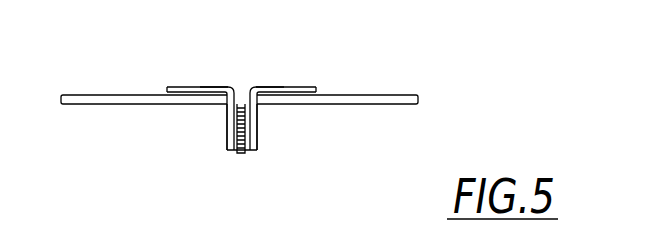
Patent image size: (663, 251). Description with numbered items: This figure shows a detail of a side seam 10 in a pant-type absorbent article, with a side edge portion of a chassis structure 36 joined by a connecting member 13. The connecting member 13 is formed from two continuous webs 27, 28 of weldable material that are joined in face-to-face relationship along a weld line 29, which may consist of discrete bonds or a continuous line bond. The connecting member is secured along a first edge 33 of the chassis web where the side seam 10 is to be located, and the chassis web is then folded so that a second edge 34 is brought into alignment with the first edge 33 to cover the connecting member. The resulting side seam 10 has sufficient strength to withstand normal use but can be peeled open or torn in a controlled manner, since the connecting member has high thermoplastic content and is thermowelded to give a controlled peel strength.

The side seam 10 is at (227, 117).
The connecting member 13 is at (262, 91).
The continuous web of weldable material 27 is at (183, 87).
The continuous web of weldable material 28 is at (302, 87).
The weld line 29 is at (257, 117).
The first edge of the chassis web 33 is at (231, 152).
The second edge of the chassis web 34 is at (253, 152).
The chassis structure 36 is at (378, 99).